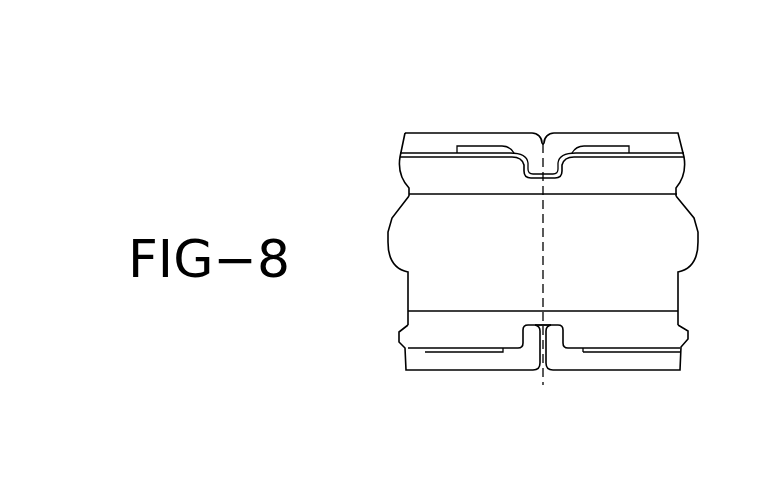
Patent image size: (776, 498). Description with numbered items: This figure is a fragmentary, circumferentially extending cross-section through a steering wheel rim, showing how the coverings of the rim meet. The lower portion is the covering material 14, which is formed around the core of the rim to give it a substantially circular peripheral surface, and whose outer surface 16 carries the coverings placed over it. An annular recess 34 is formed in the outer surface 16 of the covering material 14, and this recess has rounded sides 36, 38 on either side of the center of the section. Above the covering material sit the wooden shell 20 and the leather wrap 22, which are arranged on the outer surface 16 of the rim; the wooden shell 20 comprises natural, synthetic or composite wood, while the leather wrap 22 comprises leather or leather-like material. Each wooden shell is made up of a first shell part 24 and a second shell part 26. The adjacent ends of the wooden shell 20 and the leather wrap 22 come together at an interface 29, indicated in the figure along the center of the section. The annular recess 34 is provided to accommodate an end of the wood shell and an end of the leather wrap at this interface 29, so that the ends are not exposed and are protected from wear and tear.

The covering material 14 is at (410, 324).
The outer surface 16 is at (424, 356).
The wooden shell 20 is at (607, 114).
The leather wrap 22 is at (472, 70).
The first shell part 24 is at (640, 133).
The second shell part 26 is at (667, 371).
The interface 29 is at (556, 283).
The annular recess 34 is at (523, 306).
The rounded side 36 is at (503, 326).
The rounded side 38 is at (564, 325).